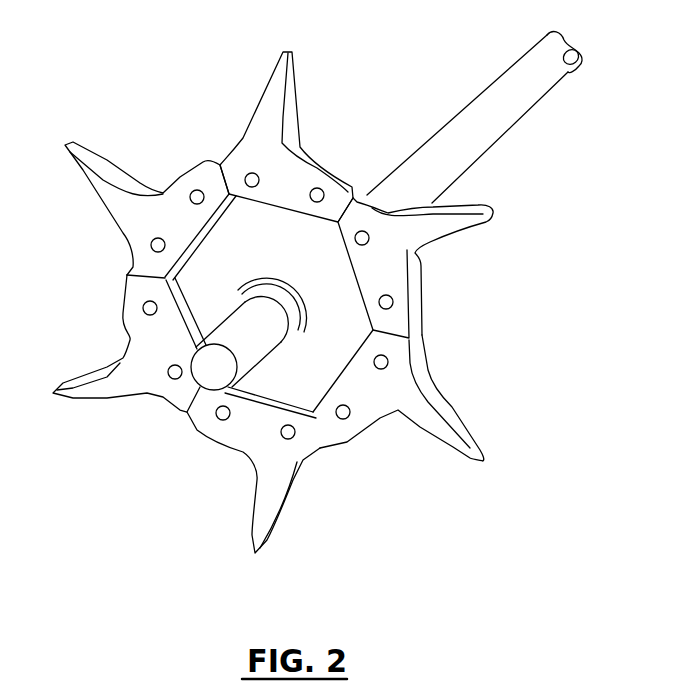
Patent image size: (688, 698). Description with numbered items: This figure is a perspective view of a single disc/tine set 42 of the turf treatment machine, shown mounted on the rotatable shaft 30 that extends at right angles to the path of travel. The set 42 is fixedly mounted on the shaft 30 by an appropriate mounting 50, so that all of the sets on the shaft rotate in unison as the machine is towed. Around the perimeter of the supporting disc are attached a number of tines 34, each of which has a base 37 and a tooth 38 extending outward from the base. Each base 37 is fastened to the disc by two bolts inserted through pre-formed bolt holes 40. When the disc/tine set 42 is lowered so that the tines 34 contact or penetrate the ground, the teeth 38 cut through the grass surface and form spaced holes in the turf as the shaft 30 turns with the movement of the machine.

The shaft 30 is at (216, 370).
The tine 34 is at (87, 167).
The base 37 is at (290, 172).
The tooth 38 is at (283, 68).
The bolt holes 40 is at (288, 436).
The disc/tine set 42 is at (529, 280).
The mounting 50 is at (300, 327).